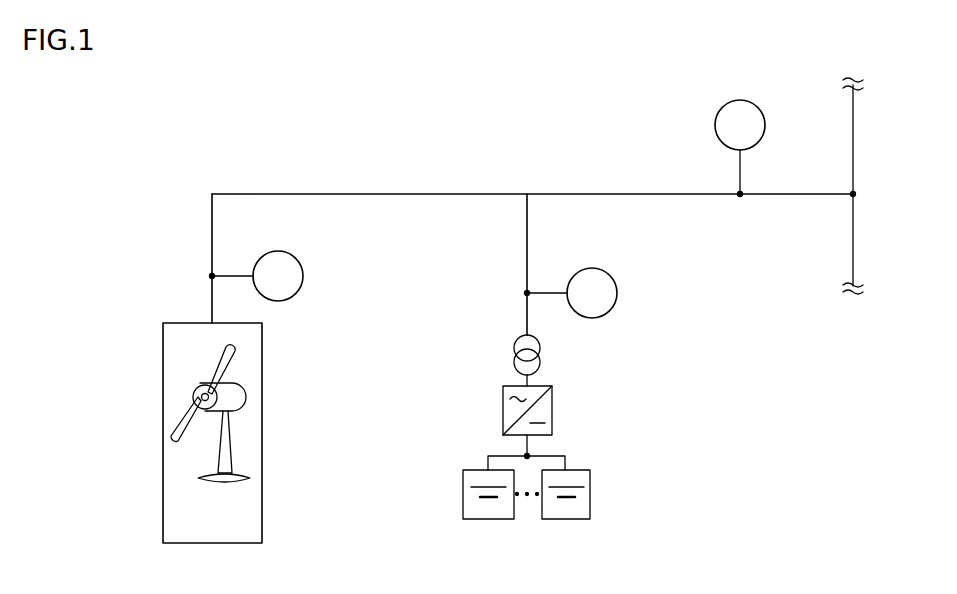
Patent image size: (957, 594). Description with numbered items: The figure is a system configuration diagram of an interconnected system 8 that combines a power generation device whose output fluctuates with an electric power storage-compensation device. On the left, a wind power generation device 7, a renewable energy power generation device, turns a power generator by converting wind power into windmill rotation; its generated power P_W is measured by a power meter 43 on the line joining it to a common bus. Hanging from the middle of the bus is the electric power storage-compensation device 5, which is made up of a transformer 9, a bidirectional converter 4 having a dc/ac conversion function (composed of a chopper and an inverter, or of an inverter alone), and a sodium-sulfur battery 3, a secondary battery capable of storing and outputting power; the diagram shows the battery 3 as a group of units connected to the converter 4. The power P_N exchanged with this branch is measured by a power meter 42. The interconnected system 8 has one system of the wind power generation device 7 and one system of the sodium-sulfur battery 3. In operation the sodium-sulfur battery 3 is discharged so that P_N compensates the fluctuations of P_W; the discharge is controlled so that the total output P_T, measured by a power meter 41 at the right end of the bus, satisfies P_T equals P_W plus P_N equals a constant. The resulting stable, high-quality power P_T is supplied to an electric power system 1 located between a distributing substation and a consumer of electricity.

The electric power system 1 is at (853, 148).
The sodium-sulfur battery 3 is at (468, 510).
The bidirectional converter 4 is at (503, 402).
The electric power storage-compensation device 5 is at (415, 339).
The wind power generation device 7 is at (250, 537).
The interconnected system 8 is at (555, 117).
The transformer 9 is at (515, 352).
The power meter 41 is at (756, 105).
The power meter 42 is at (611, 275).
The power meter 43 is at (300, 263).